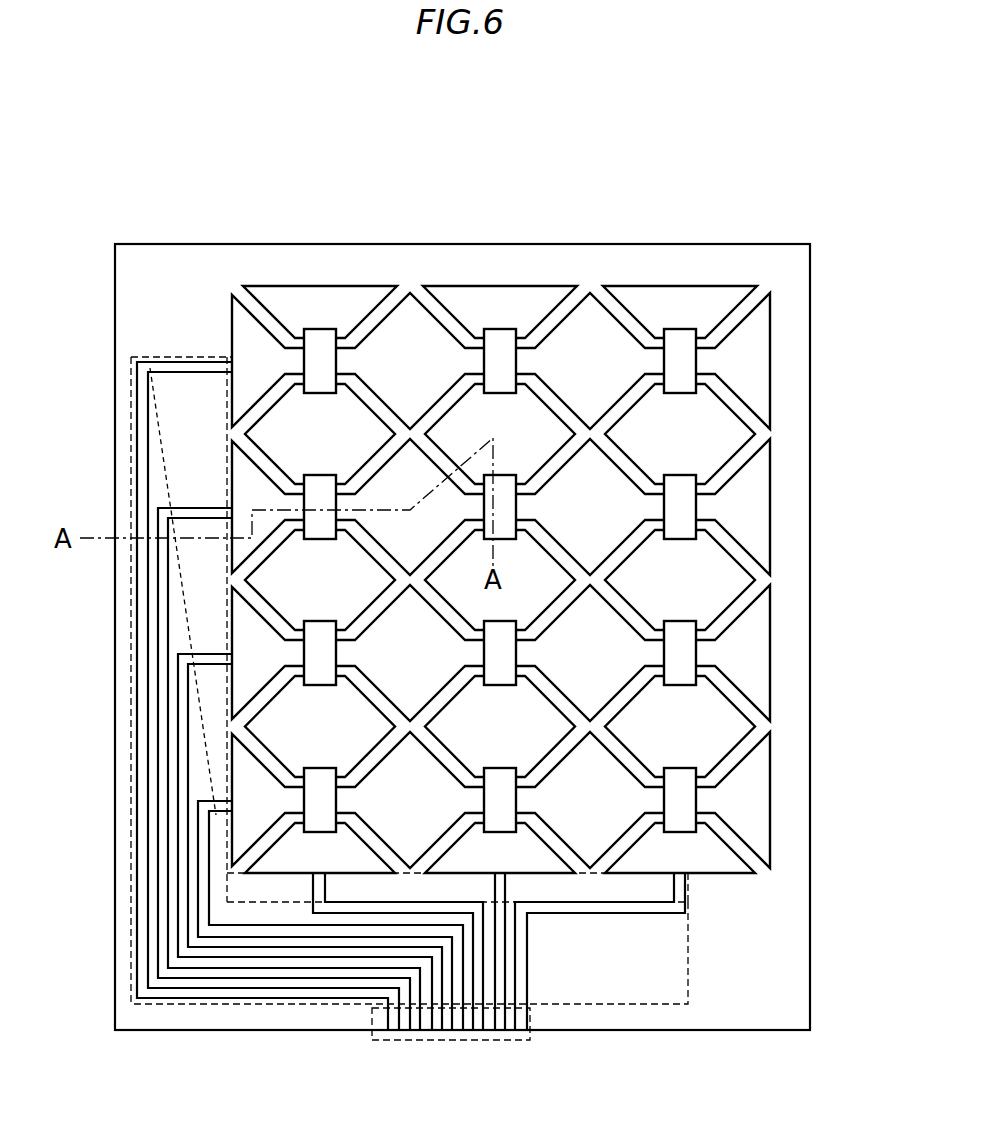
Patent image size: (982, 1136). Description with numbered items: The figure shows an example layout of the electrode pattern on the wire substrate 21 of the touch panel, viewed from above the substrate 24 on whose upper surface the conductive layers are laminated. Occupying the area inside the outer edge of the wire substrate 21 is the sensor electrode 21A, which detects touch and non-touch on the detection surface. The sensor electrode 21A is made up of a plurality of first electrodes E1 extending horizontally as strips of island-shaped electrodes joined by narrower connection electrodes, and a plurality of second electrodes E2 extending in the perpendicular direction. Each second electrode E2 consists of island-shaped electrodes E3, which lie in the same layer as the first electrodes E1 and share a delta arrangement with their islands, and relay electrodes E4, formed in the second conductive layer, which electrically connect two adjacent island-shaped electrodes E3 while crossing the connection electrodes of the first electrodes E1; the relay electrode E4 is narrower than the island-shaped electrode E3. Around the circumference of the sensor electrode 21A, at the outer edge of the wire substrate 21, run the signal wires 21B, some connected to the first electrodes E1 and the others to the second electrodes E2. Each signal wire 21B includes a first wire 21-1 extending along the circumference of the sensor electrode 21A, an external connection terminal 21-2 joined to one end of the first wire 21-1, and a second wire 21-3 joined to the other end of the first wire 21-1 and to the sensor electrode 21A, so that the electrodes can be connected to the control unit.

The wire substrate 21 is at (806, 206).
The sensor electrode 21A is at (643, 146).
The signal wires 21B is at (207, 912).
The first wire 21-1 is at (692, 1003).
The external connection terminal 21-2 is at (450, 1044).
The second wire 21-3 is at (692, 888).
The substrate 24 is at (808, 845).
The first electrodes E1 is at (730, 355).
The second electrodes E2 is at (265, 189).
The island-shaped electrodes E3 is at (275, 305).
The relay electrodes E4 is at (320, 350).